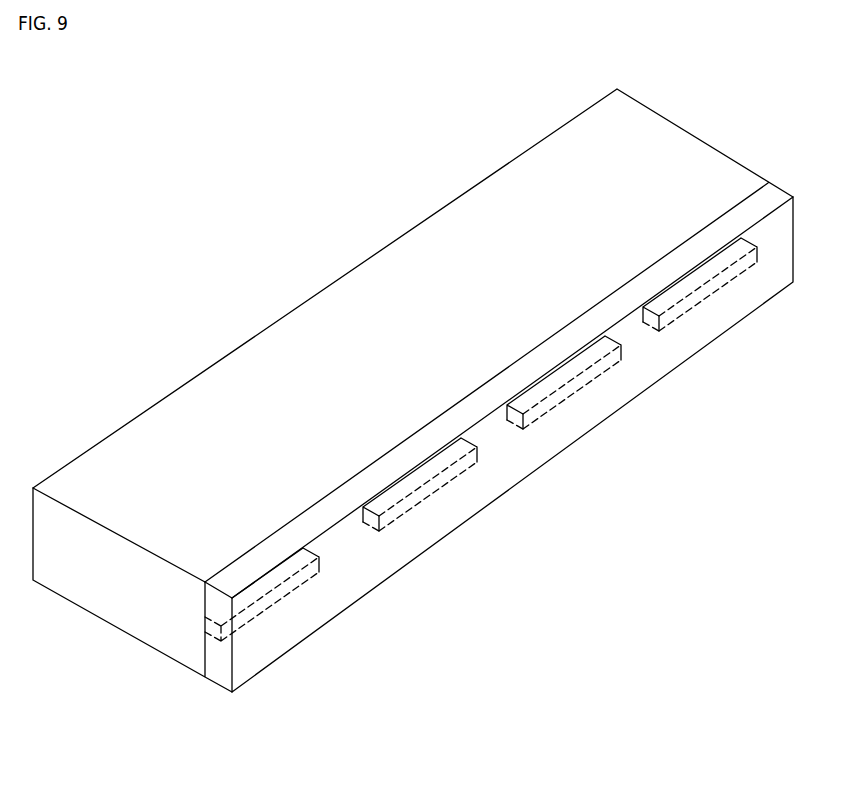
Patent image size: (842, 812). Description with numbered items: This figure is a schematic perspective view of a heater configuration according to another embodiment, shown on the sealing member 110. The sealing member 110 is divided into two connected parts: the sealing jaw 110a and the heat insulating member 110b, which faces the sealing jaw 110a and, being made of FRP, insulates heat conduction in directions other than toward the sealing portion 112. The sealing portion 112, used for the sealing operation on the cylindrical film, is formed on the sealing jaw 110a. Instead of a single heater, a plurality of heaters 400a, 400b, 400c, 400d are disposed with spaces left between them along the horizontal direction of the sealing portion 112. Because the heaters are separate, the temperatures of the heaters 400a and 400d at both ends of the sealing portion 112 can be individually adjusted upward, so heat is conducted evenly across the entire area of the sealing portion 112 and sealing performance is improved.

The sealing member 110 is at (815, 90).
The sealing jaw 110a is at (770, 197).
The heat insulating member 110b is at (682, 177).
The sealing portion 112 is at (412, 528).
The heater 400a is at (292, 603).
The heater 400b is at (472, 468).
The heater 400c is at (607, 368).
The heater 400d is at (723, 287).